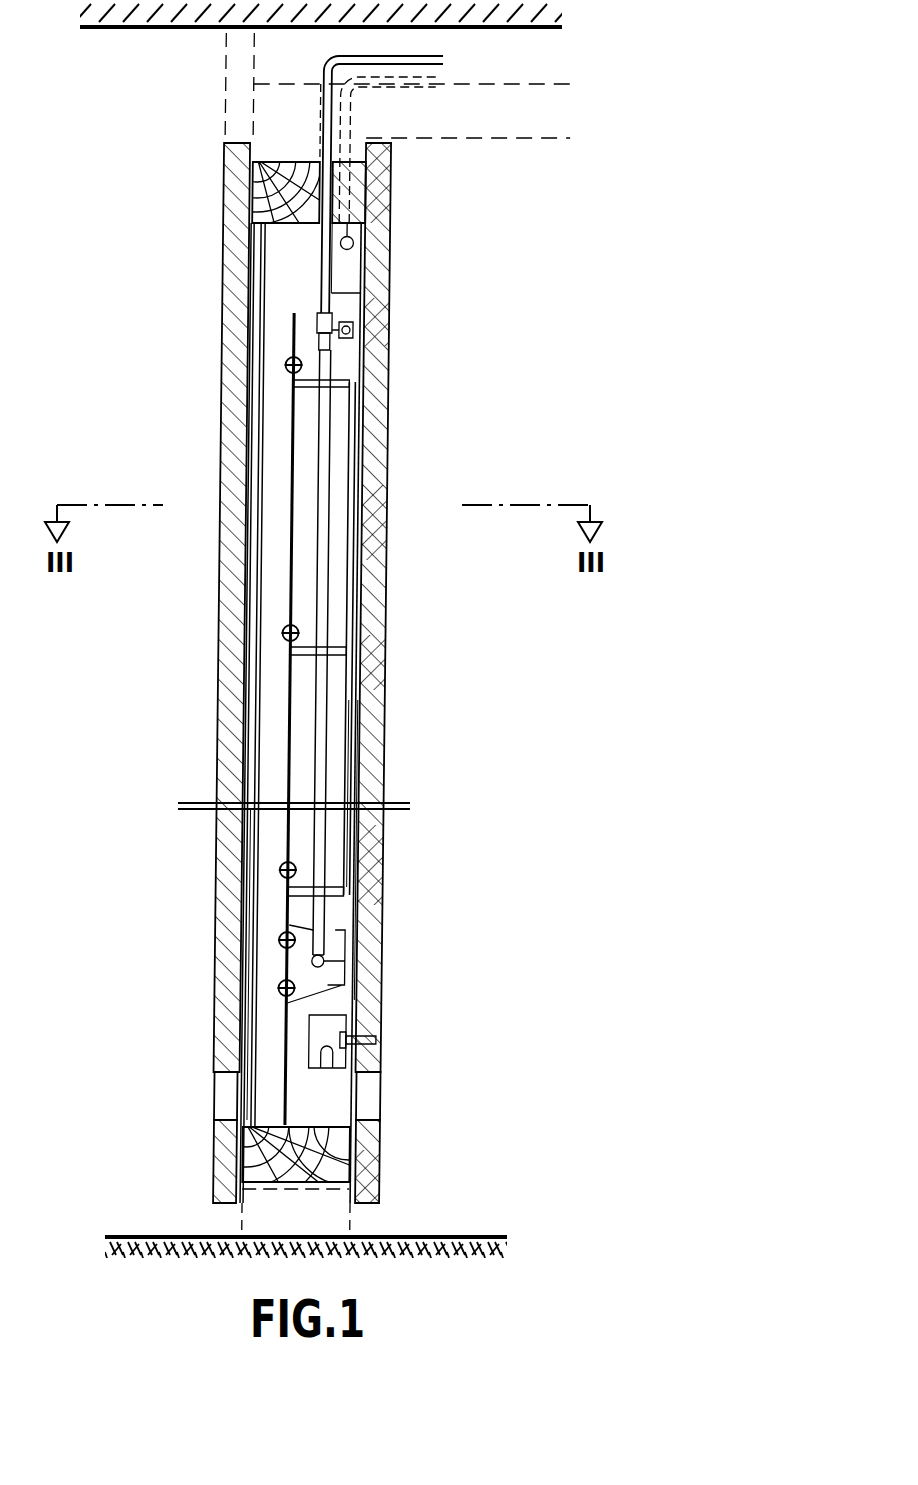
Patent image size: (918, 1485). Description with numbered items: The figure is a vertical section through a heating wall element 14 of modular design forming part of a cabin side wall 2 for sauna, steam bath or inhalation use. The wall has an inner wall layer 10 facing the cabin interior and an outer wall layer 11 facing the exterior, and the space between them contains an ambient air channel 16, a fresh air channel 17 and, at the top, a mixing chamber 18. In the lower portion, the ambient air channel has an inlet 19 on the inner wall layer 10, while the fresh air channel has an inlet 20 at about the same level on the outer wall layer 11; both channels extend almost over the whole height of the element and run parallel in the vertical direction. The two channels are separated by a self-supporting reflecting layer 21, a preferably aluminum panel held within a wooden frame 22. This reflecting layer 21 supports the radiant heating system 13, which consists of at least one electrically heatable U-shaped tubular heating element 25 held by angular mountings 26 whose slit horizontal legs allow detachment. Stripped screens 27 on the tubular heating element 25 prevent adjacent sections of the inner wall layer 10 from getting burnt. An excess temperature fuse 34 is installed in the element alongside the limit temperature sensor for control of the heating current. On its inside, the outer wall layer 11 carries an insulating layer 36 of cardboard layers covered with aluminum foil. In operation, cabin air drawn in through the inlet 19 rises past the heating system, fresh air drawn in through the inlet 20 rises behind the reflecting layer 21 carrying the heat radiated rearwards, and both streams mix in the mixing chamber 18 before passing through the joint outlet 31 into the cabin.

The vertical side wall 2 is at (411, 350).
The inner wall layer 10 is at (389, 411).
The outer wall layer 11 is at (229, 373).
The radiant heating system 13 is at (403, 708).
The heating wall element 14 is at (385, 760).
The ambient air channel 16 is at (337, 845).
The fresh air channel 17 is at (273, 845).
The mixing chamber 18 is at (292, 288).
The inlet 19 is at (377, 1097).
The inlet 20 is at (218, 1086).
The reflecting layer 21 is at (290, 597).
The wooden frame 22 is at (260, 187).
The tubular heating element 25 is at (322, 913).
The angular mounting 26 is at (298, 661).
The stripped screen 27 is at (343, 615).
The joint outlet 31 is at (385, 273).
The excess temperature fuse 34 is at (358, 250).
The insulating layer 36 is at (263, 247).